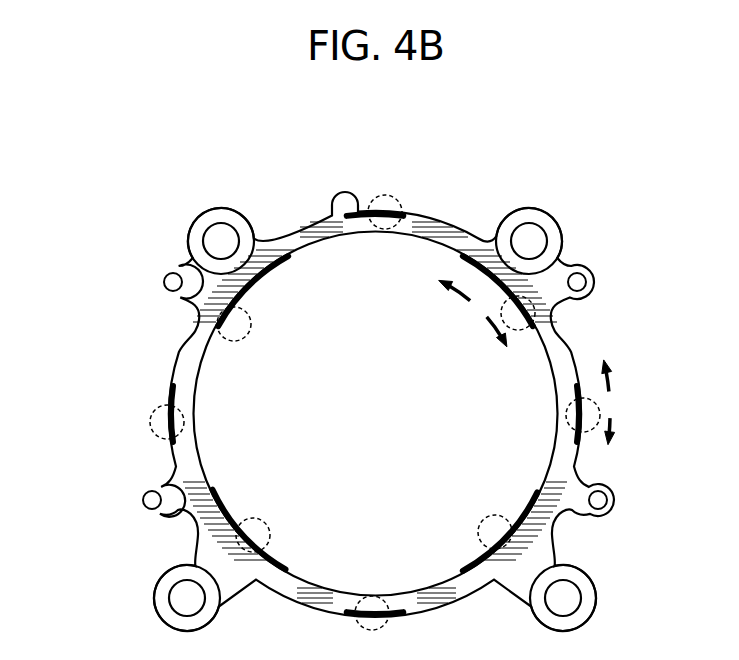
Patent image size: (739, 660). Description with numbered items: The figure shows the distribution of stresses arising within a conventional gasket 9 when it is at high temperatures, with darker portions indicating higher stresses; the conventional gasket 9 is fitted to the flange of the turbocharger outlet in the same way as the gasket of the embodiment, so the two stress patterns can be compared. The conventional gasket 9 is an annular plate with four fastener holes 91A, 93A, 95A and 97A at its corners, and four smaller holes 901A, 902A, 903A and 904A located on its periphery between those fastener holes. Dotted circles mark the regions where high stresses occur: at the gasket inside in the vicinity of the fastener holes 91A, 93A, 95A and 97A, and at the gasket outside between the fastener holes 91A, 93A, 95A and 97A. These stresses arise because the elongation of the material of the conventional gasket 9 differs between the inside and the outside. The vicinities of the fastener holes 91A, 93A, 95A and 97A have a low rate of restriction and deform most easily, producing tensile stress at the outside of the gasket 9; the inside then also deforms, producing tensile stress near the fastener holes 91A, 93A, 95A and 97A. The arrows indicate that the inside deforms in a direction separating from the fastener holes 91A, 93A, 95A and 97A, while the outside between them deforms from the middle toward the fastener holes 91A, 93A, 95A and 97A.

The conventional gasket 9 is at (515, 152).
The fastener hole 91A is at (542, 228).
The fastener hole 93A is at (575, 612).
The fastener hole 95A is at (175, 612).
The fastener hole 97A is at (208, 228).
The positioning hole 901A is at (586, 282).
The positioning hole 902A is at (607, 500).
The positioning hole 903A is at (143, 500).
The positioning hole 904A is at (164, 282).